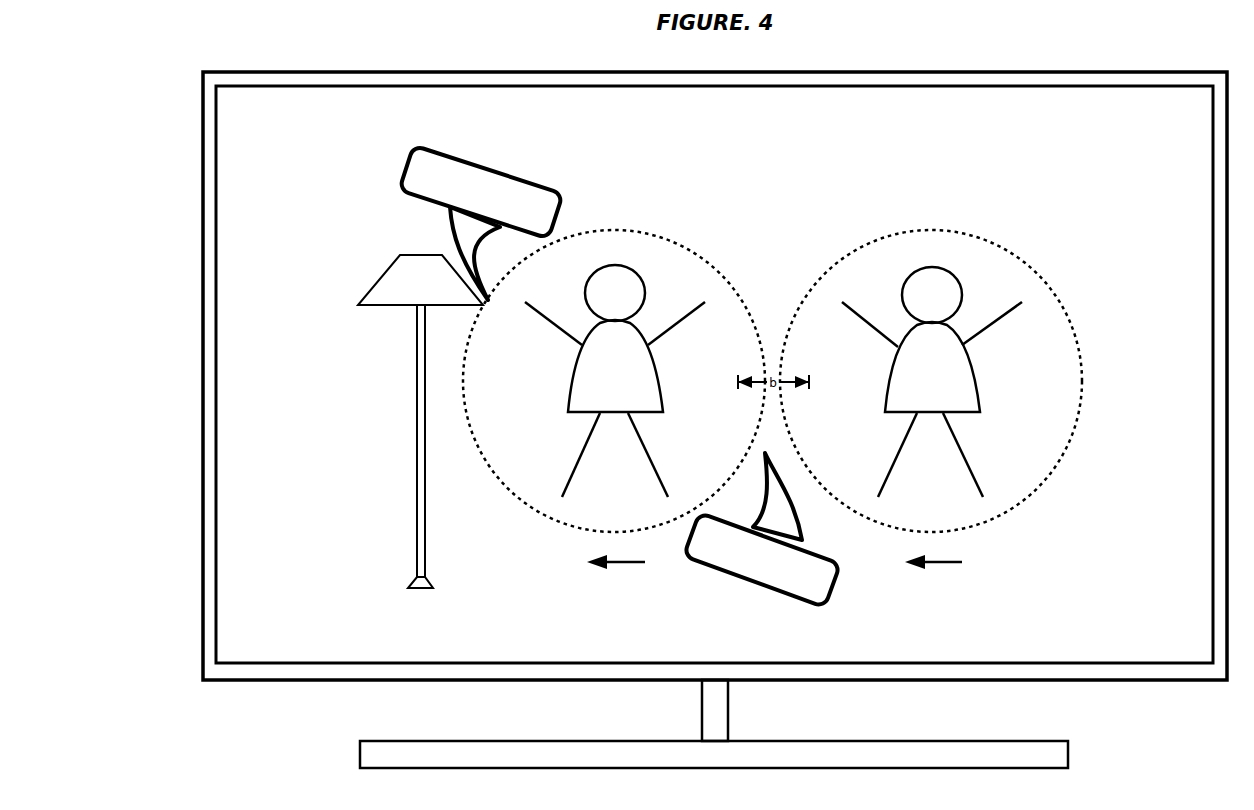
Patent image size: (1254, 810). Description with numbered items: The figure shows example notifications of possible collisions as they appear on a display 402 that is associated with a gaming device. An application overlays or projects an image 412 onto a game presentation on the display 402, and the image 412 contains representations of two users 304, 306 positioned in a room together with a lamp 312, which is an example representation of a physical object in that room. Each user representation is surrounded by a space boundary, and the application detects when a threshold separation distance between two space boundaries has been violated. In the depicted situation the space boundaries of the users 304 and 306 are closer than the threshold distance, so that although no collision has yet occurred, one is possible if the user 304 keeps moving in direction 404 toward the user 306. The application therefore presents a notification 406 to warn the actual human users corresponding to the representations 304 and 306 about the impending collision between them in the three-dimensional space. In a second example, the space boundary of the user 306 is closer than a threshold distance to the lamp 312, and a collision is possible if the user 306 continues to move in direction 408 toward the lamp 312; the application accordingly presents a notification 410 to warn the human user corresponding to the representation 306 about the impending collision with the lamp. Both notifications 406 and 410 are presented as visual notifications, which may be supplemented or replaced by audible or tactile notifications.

The display 402 is at (185, 84).
The image 412 is at (714, 374).
The lamp 312 is at (420, 421).
The user 306 is at (614, 381).
The user 304 is at (931, 381).
The direction 408 is at (616, 568).
The direction 404 is at (933, 568).
The notification 410 is at (481, 222).
The notification 406 is at (762, 530).